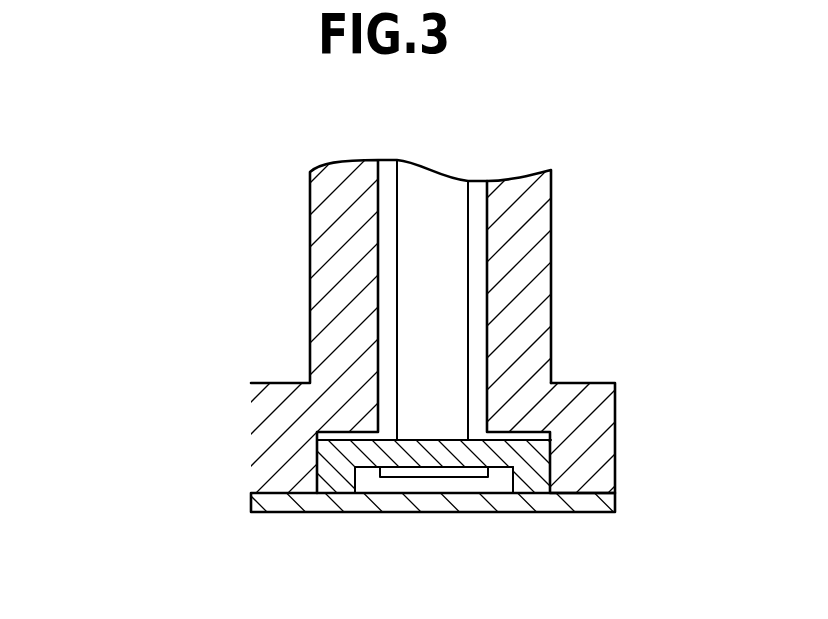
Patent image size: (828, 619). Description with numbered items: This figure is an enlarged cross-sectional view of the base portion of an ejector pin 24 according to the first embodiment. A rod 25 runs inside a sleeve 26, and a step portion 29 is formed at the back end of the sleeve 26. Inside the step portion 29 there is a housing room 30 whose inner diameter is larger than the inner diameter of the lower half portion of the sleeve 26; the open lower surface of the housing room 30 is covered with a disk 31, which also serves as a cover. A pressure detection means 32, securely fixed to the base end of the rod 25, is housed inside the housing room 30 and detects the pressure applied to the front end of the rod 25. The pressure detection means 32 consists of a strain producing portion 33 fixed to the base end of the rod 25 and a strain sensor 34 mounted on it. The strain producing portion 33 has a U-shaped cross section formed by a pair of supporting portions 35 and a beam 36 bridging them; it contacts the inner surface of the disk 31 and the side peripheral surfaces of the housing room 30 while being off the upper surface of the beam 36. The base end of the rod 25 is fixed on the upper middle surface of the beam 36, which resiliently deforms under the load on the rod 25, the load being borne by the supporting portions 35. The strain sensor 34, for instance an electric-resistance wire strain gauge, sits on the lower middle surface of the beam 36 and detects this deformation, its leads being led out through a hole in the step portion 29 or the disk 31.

The ejector pin 24 is at (280, 228).
The rod 25 is at (447, 265).
The sleeve 26 is at (530, 202).
The step portion 29 is at (603, 412).
The housing room 30 is at (488, 487).
The disk 31 is at (580, 502).
The pressure detection means 32 is at (110, 408).
The strain producing portion 33 is at (177, 380).
The strain sensor 34 is at (413, 477).
The supporting portions 35 is at (333, 473).
The beam 36 is at (432, 457).